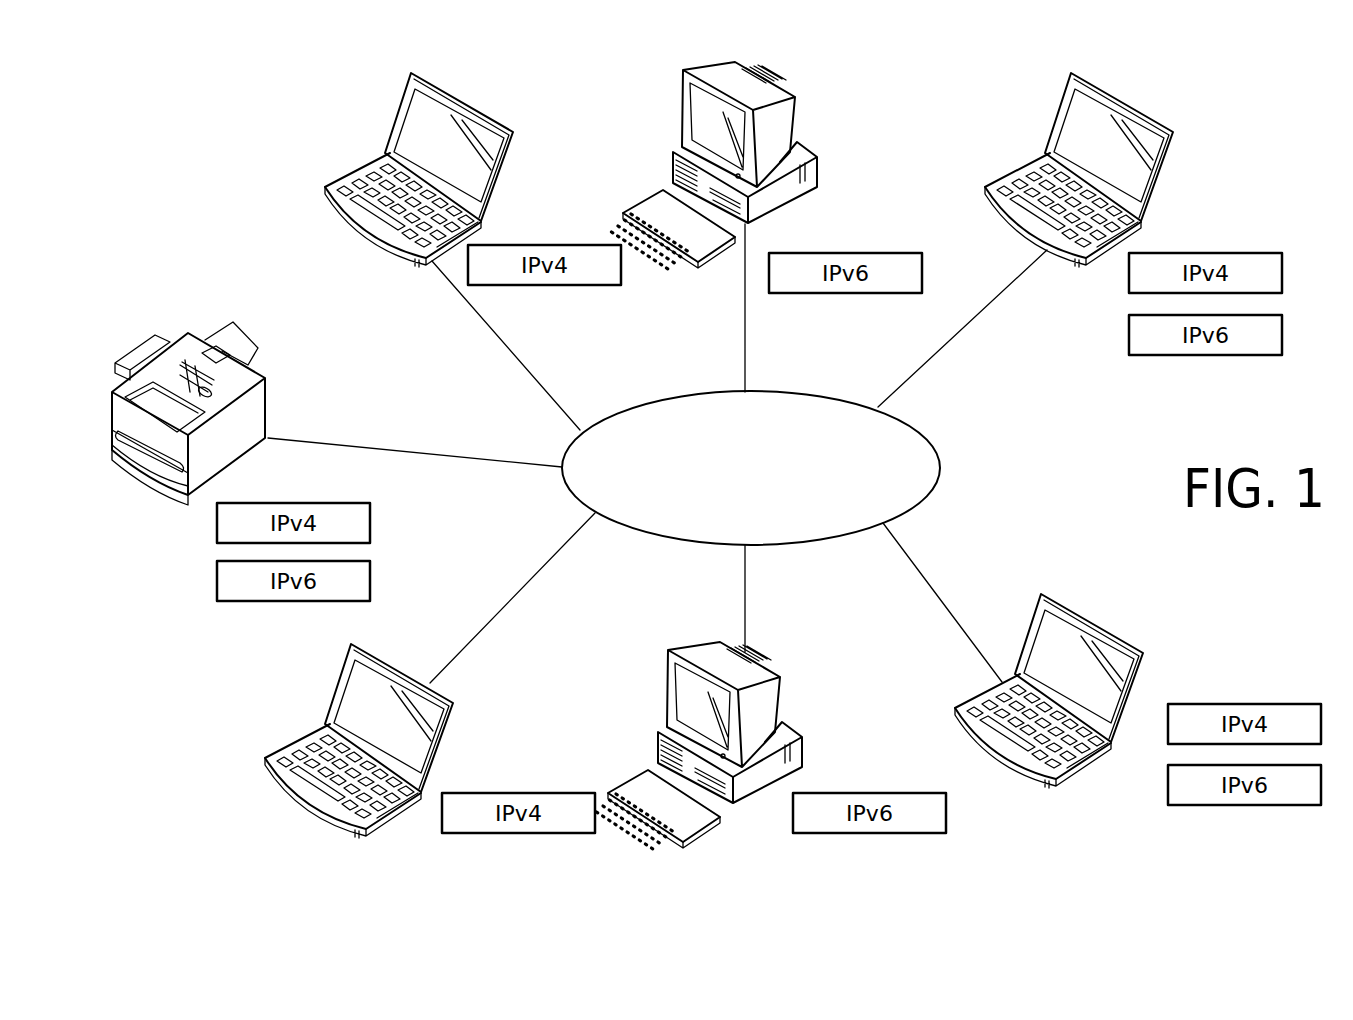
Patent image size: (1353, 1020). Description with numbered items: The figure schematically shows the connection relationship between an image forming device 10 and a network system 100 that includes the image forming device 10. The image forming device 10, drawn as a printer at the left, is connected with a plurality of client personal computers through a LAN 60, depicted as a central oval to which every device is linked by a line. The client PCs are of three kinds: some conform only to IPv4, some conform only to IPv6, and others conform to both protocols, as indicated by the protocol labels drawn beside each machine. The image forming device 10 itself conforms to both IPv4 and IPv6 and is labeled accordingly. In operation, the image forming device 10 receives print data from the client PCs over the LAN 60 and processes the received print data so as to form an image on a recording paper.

The network system 100 is at (194, 137).
The image forming device 10 is at (187, 342).
The LAN 60 is at (824, 393).